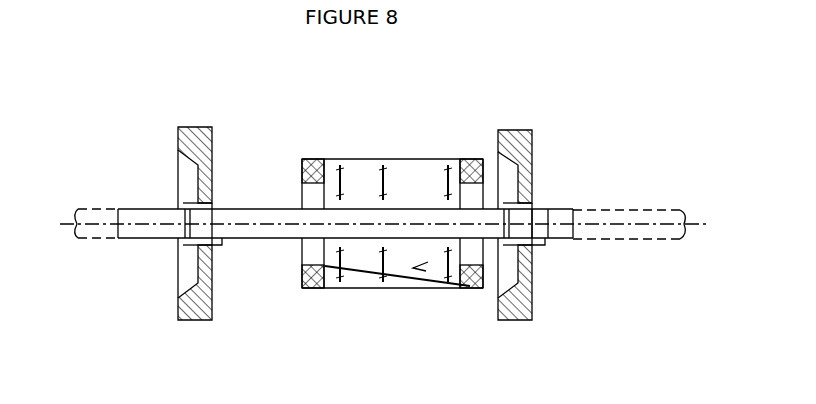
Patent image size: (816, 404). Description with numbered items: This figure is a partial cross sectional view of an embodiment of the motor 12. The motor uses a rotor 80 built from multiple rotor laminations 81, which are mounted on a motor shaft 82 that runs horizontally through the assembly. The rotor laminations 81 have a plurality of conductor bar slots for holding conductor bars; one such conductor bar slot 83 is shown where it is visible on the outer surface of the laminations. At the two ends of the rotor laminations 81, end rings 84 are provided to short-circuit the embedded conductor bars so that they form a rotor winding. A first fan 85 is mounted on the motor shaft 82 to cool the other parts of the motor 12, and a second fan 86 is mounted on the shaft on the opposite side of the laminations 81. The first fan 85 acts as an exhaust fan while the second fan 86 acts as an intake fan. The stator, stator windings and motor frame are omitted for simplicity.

The motor 12 is at (582, 78).
The rotor 80 is at (361, 178).
The rotor laminations 81 is at (408, 158).
The motor shaft 82 is at (563, 209).
The conductor bar slot 83 is at (528, 251).
The end rings 84 is at (313, 292).
The first fan 85 is at (522, 322).
The second fan 86 is at (196, 321).